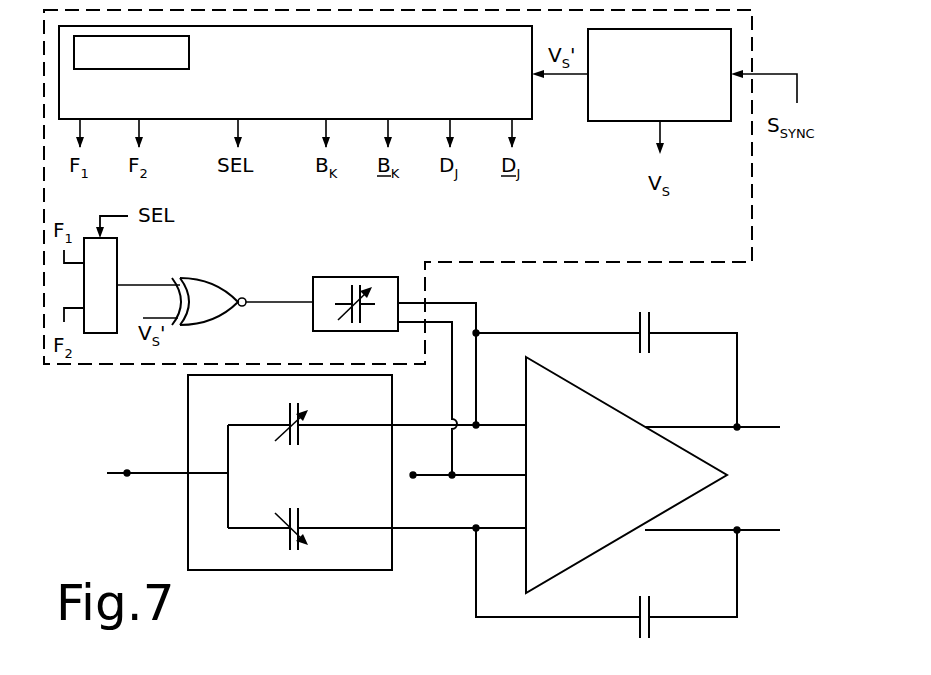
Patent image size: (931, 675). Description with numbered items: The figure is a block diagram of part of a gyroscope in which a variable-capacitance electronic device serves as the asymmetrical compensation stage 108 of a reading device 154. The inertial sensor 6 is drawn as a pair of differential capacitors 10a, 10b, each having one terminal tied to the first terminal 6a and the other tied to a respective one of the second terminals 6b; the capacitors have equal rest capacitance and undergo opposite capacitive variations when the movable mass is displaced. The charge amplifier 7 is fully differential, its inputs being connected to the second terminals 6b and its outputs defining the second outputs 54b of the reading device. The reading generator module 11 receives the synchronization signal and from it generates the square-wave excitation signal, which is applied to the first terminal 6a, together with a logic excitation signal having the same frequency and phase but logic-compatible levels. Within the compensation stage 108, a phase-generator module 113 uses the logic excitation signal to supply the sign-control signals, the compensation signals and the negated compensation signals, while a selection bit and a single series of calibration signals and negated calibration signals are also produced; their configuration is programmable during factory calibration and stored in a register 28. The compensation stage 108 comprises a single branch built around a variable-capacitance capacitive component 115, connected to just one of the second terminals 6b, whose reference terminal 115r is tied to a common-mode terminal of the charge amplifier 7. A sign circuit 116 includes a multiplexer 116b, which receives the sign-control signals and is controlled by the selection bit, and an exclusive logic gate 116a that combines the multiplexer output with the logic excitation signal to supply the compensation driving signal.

The register 28 is at (73, 50).
The phase-generator module 113 is at (532, 100).
The reading generator module 11 is at (690, 121).
The compensation stage 108 is at (535, 262).
The sign circuit 116 is at (230, 268).
The exclusive logic gate 116a is at (214, 320).
The multiplexer 116b is at (117, 265).
The variable-capacitance capacitive component 115 is at (360, 277).
The reference terminal 115r is at (450, 480).
The charge amplifier 7 is at (672, 312).
The reading device 154 is at (775, 337).
The second outputs 54b is at (779, 430).
The second terminals 6b is at (477, 421).
The inertial sensor 6 is at (187, 525).
The first terminal 6a is at (125, 470).
The differential capacitor 10a is at (285, 418).
The differential capacitor 10b is at (300, 517).